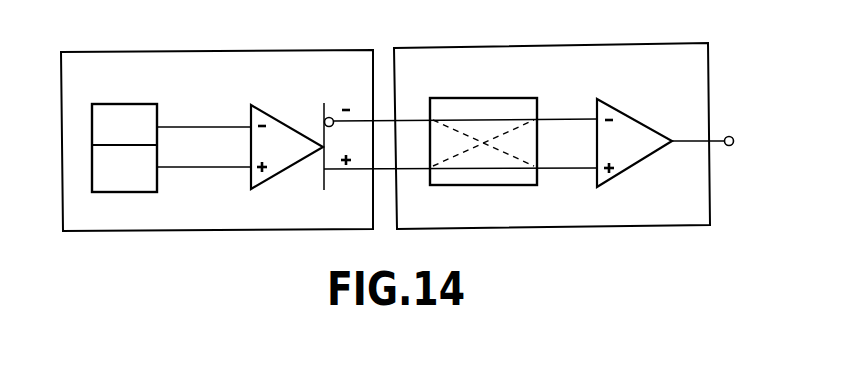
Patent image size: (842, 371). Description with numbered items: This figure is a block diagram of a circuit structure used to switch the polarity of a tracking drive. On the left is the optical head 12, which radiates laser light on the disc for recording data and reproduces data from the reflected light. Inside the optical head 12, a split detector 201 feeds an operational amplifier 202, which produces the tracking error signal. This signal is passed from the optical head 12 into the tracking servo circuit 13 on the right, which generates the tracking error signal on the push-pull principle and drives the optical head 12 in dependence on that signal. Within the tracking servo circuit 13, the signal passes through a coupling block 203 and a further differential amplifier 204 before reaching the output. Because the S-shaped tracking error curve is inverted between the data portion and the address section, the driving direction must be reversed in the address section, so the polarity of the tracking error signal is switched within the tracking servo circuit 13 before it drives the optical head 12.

The optical head 12 is at (200, 49).
The tracking servo circuit 13 is at (532, 45).
The split detector 201 is at (122, 104).
The operational amplifier 202 is at (274, 113).
The transmission line / coupling block 203 is at (478, 97).
The differential amplifier 204 is at (627, 117).